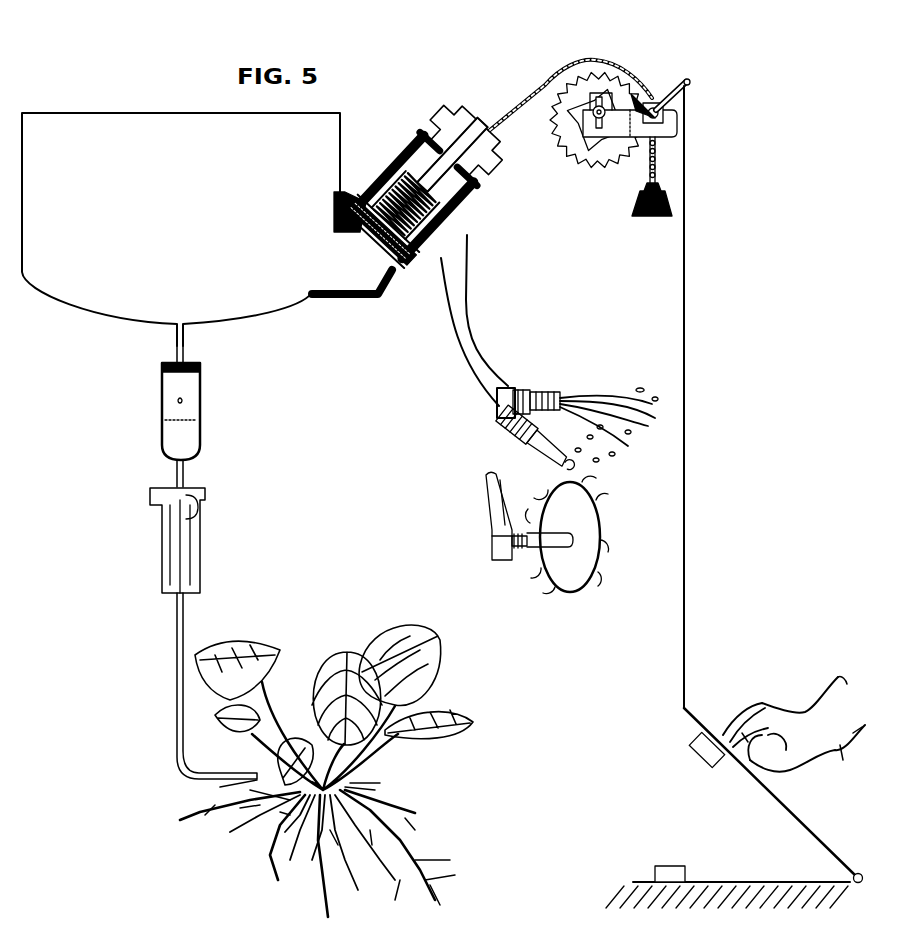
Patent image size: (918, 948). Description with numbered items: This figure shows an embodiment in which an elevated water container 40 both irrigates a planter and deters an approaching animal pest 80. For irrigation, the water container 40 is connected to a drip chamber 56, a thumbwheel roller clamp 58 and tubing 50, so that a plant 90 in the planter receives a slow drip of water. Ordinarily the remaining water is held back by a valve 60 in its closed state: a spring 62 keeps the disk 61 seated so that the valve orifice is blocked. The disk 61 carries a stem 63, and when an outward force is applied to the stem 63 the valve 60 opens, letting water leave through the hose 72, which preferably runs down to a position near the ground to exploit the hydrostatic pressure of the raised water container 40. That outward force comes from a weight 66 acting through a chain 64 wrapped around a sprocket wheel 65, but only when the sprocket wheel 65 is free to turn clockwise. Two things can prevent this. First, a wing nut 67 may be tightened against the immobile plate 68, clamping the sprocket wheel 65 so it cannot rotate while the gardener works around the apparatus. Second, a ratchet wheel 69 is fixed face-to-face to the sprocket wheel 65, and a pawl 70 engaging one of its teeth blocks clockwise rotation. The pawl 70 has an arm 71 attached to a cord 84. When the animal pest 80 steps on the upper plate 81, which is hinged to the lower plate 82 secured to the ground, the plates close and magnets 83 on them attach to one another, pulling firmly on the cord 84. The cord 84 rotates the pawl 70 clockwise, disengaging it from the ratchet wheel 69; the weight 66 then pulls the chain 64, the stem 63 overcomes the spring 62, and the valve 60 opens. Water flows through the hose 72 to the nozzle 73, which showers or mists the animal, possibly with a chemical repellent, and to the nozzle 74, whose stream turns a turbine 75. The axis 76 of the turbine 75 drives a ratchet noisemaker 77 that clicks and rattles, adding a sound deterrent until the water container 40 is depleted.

The water container 40 is at (188, 224).
The tubing 50 is at (174, 348).
The drip chamber 56 is at (160, 415).
The thumbwheel roller clamp 58 is at (160, 545).
The valve 60 is at (410, 130).
The disk 61 is at (376, 246).
The spring 62 is at (408, 188).
The stem 63 is at (483, 135).
The chain 64 is at (580, 56).
The sprocket wheel 65 is at (598, 170).
The weight 66 is at (652, 218).
The wing nut 67 is at (594, 113).
The immobile plate 68 is at (592, 127).
The ratchet wheel 69 is at (605, 92).
The pawl 70 is at (648, 100).
The arm 71 is at (693, 85).
The hose 72 is at (481, 305).
The nozzle 73 is at (540, 390).
The nozzle 74 is at (520, 438).
The turbine 75 is at (585, 598).
The axis 76 is at (558, 533).
The ratchet noisemaker 77 is at (497, 562).
The animal pest 80 is at (797, 694).
The upper plate 81 is at (782, 808).
The lower plate 82 is at (760, 880).
The magnets 83 is at (702, 757).
The cord 84 is at (688, 357).
The plant 90 is at (312, 656).